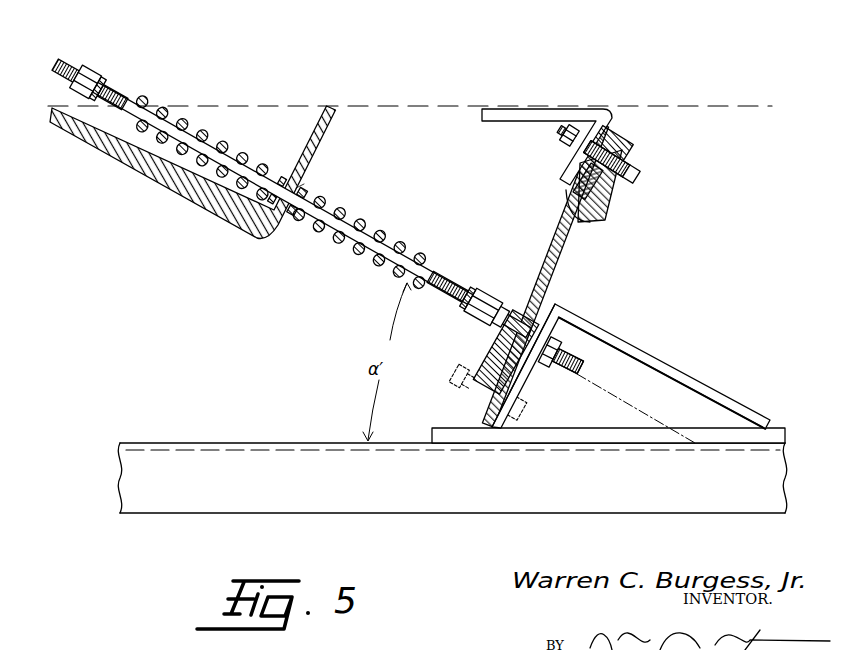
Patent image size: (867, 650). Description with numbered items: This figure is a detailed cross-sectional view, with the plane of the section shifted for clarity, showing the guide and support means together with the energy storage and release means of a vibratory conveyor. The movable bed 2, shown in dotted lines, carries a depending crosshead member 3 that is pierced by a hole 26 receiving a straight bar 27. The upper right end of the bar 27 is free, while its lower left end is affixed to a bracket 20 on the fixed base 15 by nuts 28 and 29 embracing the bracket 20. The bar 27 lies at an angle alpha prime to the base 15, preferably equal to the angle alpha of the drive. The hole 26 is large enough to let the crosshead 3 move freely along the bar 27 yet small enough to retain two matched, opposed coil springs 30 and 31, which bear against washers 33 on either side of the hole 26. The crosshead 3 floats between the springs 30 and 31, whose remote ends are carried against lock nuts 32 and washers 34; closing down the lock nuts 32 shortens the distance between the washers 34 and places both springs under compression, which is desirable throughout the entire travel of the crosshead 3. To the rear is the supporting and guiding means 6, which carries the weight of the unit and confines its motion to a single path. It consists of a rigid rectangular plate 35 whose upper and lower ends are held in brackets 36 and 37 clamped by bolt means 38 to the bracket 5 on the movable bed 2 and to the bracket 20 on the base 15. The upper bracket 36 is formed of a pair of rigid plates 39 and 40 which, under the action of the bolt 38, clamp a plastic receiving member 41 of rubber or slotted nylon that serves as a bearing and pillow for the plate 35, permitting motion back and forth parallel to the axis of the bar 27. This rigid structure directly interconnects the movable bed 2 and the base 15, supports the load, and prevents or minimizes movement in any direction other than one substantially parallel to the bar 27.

The movable bed 2 is at (706, 106).
The crosshead member 3 is at (323, 144).
The bracket 5 is at (598, 121).
The supporting and guiding means 6 is at (560, 253).
The base 15 is at (452, 514).
The bracket 20 is at (638, 346).
The hole 26 is at (303, 185).
The bar 27 is at (62, 58).
The nut 28 is at (557, 341).
The nut 29 is at (527, 323).
The coil spring 30 is at (353, 215).
The coil spring 31 is at (154, 96).
The lock nut 32 is at (88, 64).
The washer 33 is at (293, 180).
The washer 34 is at (118, 75).
The rigid rectangular plate 35 is at (586, 220).
The bracket 36 is at (618, 146).
The bracket 37 is at (470, 355).
The bolt means 38 is at (643, 172).
The rigid plate 39 is at (603, 203).
The rigid plate 40 is at (568, 193).
The plastic receiving member 41 is at (610, 199).